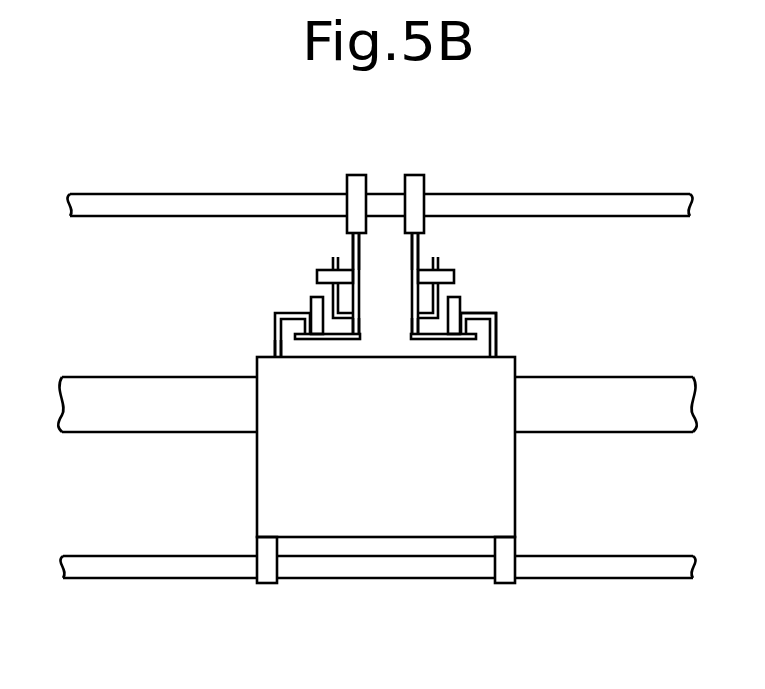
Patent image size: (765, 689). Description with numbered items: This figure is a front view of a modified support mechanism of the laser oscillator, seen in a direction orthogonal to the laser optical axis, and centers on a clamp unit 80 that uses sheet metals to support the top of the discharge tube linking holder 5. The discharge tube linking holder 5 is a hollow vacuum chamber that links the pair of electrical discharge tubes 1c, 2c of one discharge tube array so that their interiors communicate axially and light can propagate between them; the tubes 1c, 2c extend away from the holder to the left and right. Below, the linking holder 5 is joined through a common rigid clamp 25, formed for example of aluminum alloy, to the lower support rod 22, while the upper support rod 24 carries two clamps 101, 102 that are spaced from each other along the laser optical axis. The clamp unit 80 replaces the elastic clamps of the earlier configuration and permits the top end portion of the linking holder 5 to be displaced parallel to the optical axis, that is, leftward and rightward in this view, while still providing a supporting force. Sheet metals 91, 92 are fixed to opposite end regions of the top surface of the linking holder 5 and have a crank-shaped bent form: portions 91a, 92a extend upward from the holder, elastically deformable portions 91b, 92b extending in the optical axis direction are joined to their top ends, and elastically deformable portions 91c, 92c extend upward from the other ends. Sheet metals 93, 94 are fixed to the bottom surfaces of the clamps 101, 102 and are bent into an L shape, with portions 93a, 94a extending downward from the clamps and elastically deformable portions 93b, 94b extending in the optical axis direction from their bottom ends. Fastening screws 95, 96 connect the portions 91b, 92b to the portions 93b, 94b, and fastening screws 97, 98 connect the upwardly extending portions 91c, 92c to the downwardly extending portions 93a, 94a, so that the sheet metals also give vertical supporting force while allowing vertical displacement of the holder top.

The discharge tube linking holder 5 is at (498, 505).
The electrical discharge tube 1c is at (168, 418).
The electrical discharge tube 2c is at (657, 422).
The support rod 22 is at (172, 568).
The support rod 24 is at (173, 203).
The clamp 25 is at (267, 572).
The clamp unit 80 is at (166, 259).
The sheet metal 91 is at (258, 334).
The portion extending upward 91a is at (275, 342).
The elastically deformable portion 91b is at (297, 313).
The elastically deformable portion 91c is at (352, 338).
The sheet metal 92 is at (536, 314).
The portion extending upward 92a is at (498, 338).
The elastically deformable portion 92b is at (487, 312).
The elastically deformable portion 92c is at (438, 258).
The sheet metal 93 is at (338, 238).
The portion extending downward 93a is at (361, 258).
The elastically deformable portion 93b is at (342, 340).
The sheet metal 94 is at (434, 233).
The portion extending downward 94a is at (419, 248).
The elastically deformable portion 94b is at (465, 342).
The fastening screw 95 is at (305, 340).
The fastening screw 96 is at (438, 340).
The fastening screw 97 is at (323, 270).
The fastening screw 98 is at (455, 269).
The clamp 101 is at (355, 182).
The clamp 102 is at (417, 180).